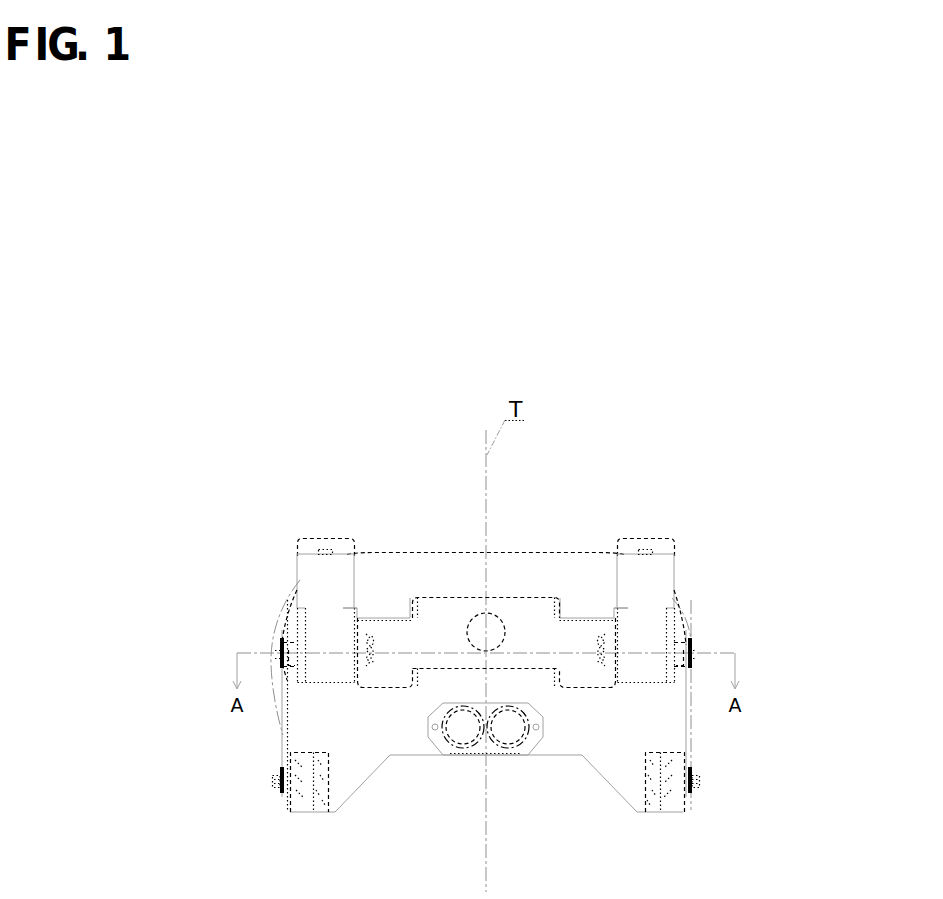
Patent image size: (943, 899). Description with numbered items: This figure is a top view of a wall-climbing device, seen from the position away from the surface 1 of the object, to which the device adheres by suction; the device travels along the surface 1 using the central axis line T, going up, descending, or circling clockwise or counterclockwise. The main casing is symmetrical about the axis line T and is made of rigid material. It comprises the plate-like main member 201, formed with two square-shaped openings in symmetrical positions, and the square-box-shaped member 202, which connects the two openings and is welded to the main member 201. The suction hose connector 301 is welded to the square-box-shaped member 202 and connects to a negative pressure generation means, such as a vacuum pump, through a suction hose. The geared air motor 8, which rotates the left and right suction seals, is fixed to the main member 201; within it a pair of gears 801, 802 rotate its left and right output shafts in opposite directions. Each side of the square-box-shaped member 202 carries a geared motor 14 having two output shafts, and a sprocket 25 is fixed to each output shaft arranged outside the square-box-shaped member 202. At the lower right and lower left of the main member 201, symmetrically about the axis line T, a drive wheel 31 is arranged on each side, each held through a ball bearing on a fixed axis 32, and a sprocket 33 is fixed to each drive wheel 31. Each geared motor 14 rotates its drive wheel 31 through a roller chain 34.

The surface 1 is at (680, 425).
The geared motor 14 is at (330, 580).
The sprocket 25 is at (282, 648).
The roller chain 34 is at (282, 728).
The sprocket 33 is at (277, 780).
The fixed axis 32 is at (303, 778).
The drive wheel 31 is at (308, 800).
The suction hose connector 301 is at (476, 614).
The main member 201 is at (497, 577).
The square-box-shaped member 202 is at (530, 612).
The gear 801 is at (460, 755).
The gear 802 is at (510, 755).
The geared air motor 8 is at (487, 755).